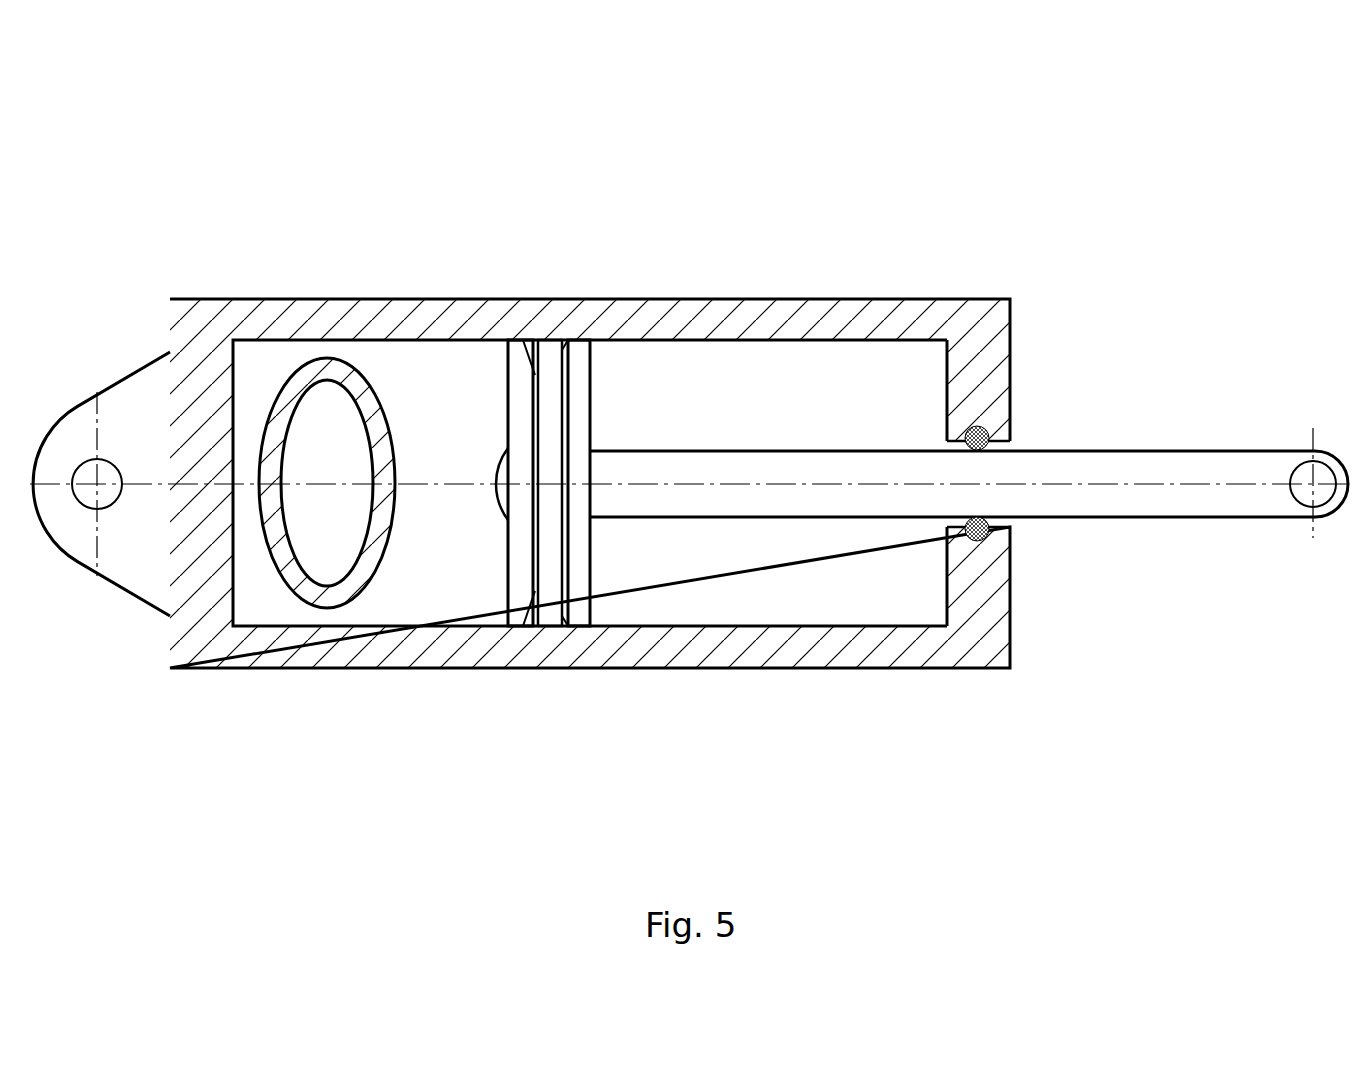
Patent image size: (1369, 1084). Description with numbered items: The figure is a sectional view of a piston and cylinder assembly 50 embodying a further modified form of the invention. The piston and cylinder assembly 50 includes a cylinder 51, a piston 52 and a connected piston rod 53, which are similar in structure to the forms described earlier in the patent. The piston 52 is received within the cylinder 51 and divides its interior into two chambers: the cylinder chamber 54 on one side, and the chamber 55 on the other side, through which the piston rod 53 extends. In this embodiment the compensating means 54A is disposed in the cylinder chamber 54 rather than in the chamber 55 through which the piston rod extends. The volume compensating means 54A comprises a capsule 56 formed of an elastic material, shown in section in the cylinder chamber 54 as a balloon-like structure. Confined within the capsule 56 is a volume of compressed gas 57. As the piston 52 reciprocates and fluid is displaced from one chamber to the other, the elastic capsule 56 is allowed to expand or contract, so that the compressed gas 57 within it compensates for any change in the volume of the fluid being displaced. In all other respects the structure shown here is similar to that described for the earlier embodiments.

The piston and cylinder assembly 50 is at (632, 247).
The cylinder 51 is at (787, 298).
The piston 52 is at (590, 595).
The piston rod 53 is at (1087, 482).
The cylinder chamber 54 is at (420, 408).
The compensating means 54A is at (277, 582).
The chamber 55 is at (817, 592).
The capsule 56 is at (317, 598).
The compressed gas 57 is at (327, 550).